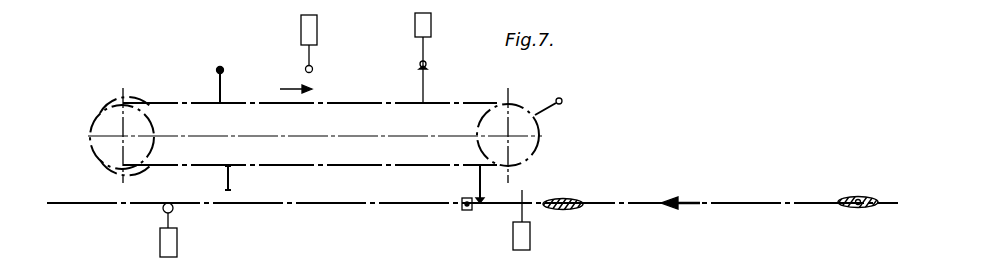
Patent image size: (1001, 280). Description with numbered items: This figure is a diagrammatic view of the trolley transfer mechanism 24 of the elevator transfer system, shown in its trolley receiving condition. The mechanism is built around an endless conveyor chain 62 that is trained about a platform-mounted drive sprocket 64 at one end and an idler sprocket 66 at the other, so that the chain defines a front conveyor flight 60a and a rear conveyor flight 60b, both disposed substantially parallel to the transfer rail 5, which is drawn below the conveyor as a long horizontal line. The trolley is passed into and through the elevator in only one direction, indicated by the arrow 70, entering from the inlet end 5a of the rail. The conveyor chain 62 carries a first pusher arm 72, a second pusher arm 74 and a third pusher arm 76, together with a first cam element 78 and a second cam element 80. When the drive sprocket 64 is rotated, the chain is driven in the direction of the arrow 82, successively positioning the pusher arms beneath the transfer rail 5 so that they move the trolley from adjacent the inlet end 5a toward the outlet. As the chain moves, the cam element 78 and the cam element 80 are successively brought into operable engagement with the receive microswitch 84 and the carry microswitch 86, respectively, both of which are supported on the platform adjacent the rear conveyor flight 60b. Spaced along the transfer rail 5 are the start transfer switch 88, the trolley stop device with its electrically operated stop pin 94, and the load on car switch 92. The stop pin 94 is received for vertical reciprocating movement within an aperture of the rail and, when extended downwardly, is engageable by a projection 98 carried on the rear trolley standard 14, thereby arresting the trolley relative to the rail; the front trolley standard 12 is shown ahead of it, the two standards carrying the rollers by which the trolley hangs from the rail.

The transfer conveyor rail 5 is at (344, 200).
The inlet end 5a is at (620, 200).
The front trolley standard 12 is at (553, 212).
The rear trolley standard 14 is at (848, 208).
The trolley transfer mechanism 24 is at (564, 81).
The front conveyor flight 60a is at (145, 172).
The rear conveyor flight 60b is at (165, 64).
The endless conveyor chain 62 is at (350, 100).
The drive sprocket 64 is at (153, 126).
The idler sprocket 66 is at (483, 110).
The arrow 70 is at (688, 210).
The first pusher arm 72 is at (478, 182).
The second pusher arm 74 is at (554, 106).
The third pusher arm 76 is at (222, 76).
The first cam element 78 is at (426, 72).
The second cam element 80 is at (231, 181).
The arrow 82 is at (306, 93).
The receive microswitch 84 is at (432, 24).
The carry microswitch 86 is at (301, 20).
The start transfer switch 88 is at (512, 239).
The load on car switch 92 is at (179, 245).
The stop pin 94 is at (460, 214).
The projection 98 is at (857, 200).